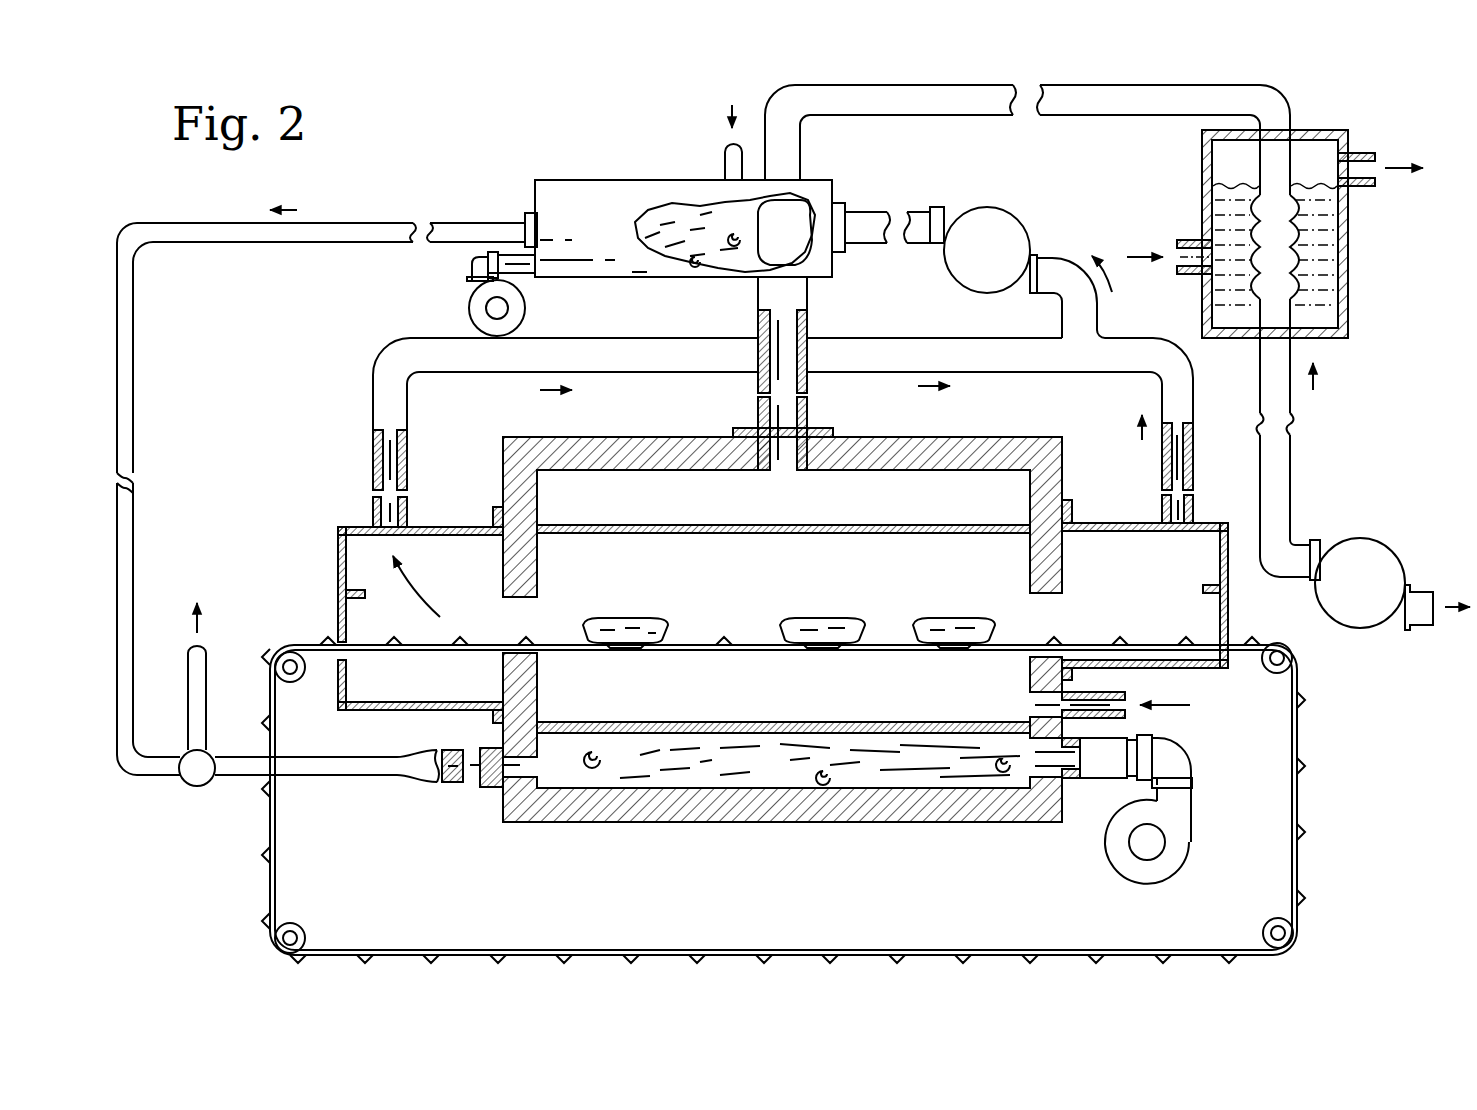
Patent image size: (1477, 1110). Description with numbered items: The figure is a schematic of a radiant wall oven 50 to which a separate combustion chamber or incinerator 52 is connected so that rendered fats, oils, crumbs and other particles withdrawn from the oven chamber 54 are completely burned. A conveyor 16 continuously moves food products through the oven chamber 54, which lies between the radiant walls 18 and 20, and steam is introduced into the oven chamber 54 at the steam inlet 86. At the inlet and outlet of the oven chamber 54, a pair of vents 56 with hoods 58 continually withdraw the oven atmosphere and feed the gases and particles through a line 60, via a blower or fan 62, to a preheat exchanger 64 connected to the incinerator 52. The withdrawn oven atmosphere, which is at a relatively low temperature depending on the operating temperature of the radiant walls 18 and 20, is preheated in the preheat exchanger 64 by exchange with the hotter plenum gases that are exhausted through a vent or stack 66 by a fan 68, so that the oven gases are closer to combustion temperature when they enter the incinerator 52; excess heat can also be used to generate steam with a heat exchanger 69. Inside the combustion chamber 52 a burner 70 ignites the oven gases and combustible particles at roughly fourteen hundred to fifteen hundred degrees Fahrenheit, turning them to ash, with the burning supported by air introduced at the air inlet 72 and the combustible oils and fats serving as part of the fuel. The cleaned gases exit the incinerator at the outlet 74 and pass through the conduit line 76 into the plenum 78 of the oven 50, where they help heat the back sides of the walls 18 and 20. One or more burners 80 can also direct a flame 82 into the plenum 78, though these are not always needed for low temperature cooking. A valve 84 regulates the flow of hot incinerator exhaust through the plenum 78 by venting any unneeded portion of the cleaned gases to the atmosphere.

The conveyor 16 is at (268, 700).
The radiant wall 18 is at (617, 533).
The radiant wall 20 is at (710, 722).
The radiant wall oven 50 is at (324, 426).
The combustion chamber 52 is at (690, 228).
The oven chamber 54 is at (782, 629).
The vent 56 is at (410, 517).
The hood 58 is at (338, 552).
The line 60 is at (1145, 385).
The blower 62 is at (1000, 263).
The preheat exchanger 64 is at (797, 248).
The vent or stack 66 is at (758, 420).
The fan 68 is at (1375, 597).
The heat exchanger 69 is at (1202, 153).
The burner 70 is at (470, 318).
The air inlet 72 is at (725, 152).
The incinerator outlet 74 is at (525, 216).
The conduit line 76 is at (235, 244).
The plenum 78 is at (898, 510).
The burner 80 is at (1108, 852).
The flame 82 is at (970, 776).
The valve 84 is at (203, 787).
The steam inlet 86 is at (1118, 720).